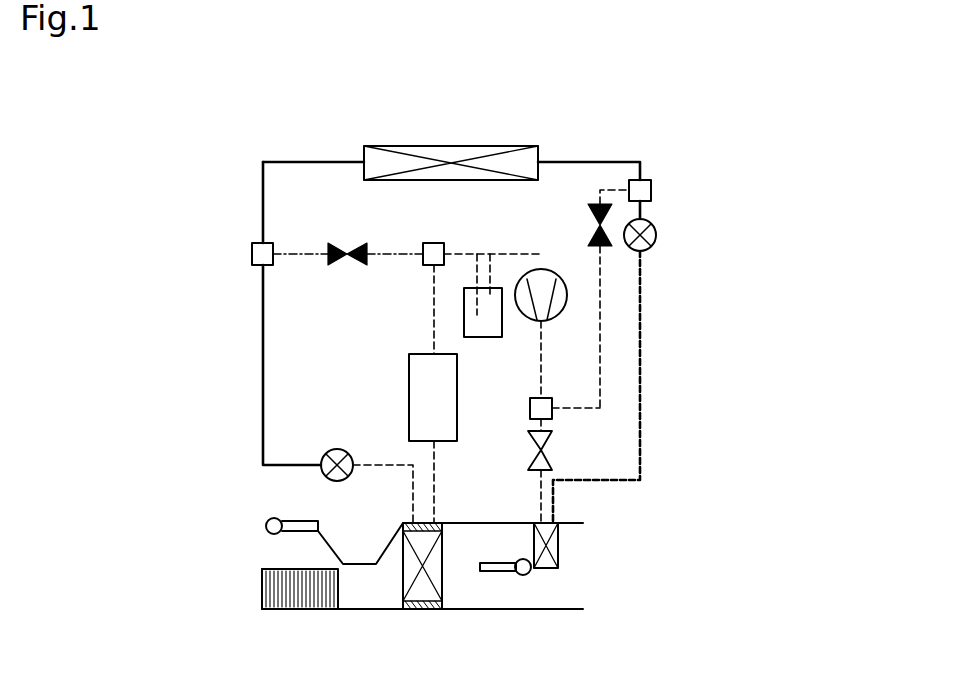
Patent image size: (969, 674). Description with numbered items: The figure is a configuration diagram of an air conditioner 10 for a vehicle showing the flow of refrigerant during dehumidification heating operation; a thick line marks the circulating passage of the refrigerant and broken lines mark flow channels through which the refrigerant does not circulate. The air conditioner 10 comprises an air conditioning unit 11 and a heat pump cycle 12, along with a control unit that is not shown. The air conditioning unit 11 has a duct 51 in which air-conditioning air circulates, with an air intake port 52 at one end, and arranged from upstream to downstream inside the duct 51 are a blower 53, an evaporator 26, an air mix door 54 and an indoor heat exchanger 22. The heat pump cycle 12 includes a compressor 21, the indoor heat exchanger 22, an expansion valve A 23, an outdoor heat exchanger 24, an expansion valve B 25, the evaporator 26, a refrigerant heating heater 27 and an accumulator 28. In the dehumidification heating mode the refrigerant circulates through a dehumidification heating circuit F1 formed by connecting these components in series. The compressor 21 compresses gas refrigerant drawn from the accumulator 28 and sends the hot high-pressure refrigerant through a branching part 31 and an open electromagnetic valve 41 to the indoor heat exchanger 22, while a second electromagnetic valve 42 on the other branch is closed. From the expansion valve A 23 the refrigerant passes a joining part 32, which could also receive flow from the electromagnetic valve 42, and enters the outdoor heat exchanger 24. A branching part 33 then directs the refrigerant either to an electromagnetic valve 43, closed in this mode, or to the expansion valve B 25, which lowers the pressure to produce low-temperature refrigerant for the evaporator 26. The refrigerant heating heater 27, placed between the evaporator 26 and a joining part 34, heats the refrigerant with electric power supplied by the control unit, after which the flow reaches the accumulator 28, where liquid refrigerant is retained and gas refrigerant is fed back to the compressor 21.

The air conditioner 10 is at (104, 122).
The air conditioning unit 11 is at (189, 521).
The heat pump cycle 12 is at (186, 146).
The compressor 21 is at (556, 315).
The indoor heat exchanger 22 is at (560, 545).
The expansion valve A 23 is at (656, 235).
The outdoor heat exchanger 24 is at (402, 148).
The expansion valve B 25 is at (337, 449).
The evaporator 26 is at (432, 612).
The refrigerant heating heater 27 is at (409, 393).
The accumulator 28 is at (482, 338).
The branching part 31 is at (530, 408).
The joining part 32 is at (651, 190).
The branching part 33 is at (252, 254).
The joining part 34 is at (434, 243).
The electromagnetic valve 41 is at (528, 455).
The electromagnetic valve 42 is at (588, 218).
The electromagnetic valve 43 is at (346, 243).
The duct 51 is at (362, 611).
The air intake port 52 is at (266, 528).
The blower 53 is at (302, 612).
The air mix door 54 is at (498, 574).
The dehumidification heating circuit F1 is at (303, 162).